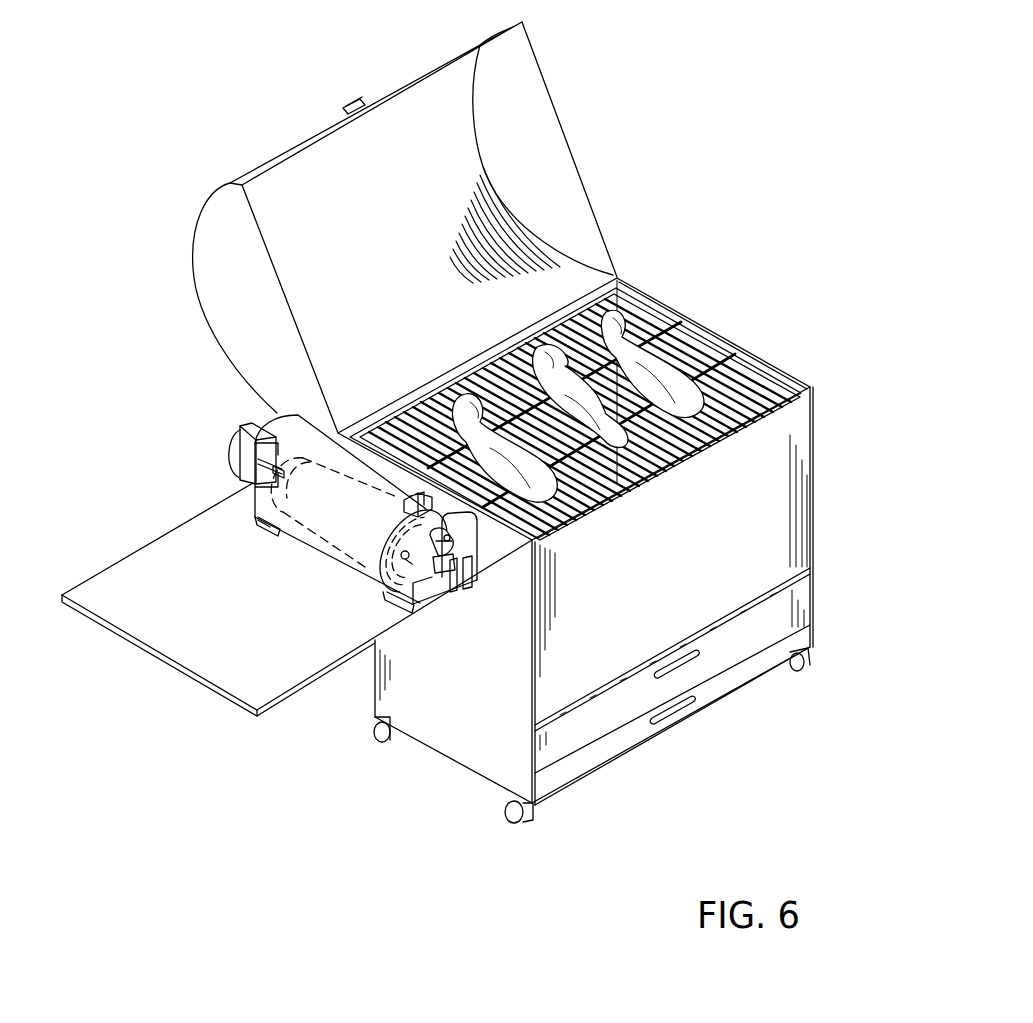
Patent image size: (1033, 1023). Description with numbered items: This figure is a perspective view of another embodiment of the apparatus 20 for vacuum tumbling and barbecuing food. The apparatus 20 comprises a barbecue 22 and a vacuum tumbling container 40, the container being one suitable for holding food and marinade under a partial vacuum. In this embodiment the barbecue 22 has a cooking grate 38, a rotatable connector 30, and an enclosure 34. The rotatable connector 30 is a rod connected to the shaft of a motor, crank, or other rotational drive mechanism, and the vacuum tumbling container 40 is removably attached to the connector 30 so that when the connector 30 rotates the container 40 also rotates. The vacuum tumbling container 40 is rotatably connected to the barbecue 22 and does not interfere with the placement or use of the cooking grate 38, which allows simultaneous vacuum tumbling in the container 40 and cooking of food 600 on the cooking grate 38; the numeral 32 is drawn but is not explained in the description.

The apparatus 20 is at (698, 66).
The barbecue 22 is at (698, 287).
The rotatable connector 30 is at (234, 412).
The rotisserie shaft / coupling 32 is at (232, 492).
The enclosure 34 is at (293, 538).
The cooking grate 38 is at (622, 294).
The vacuum tumbling container 40 is at (368, 563).
The food 600 is at (665, 378).